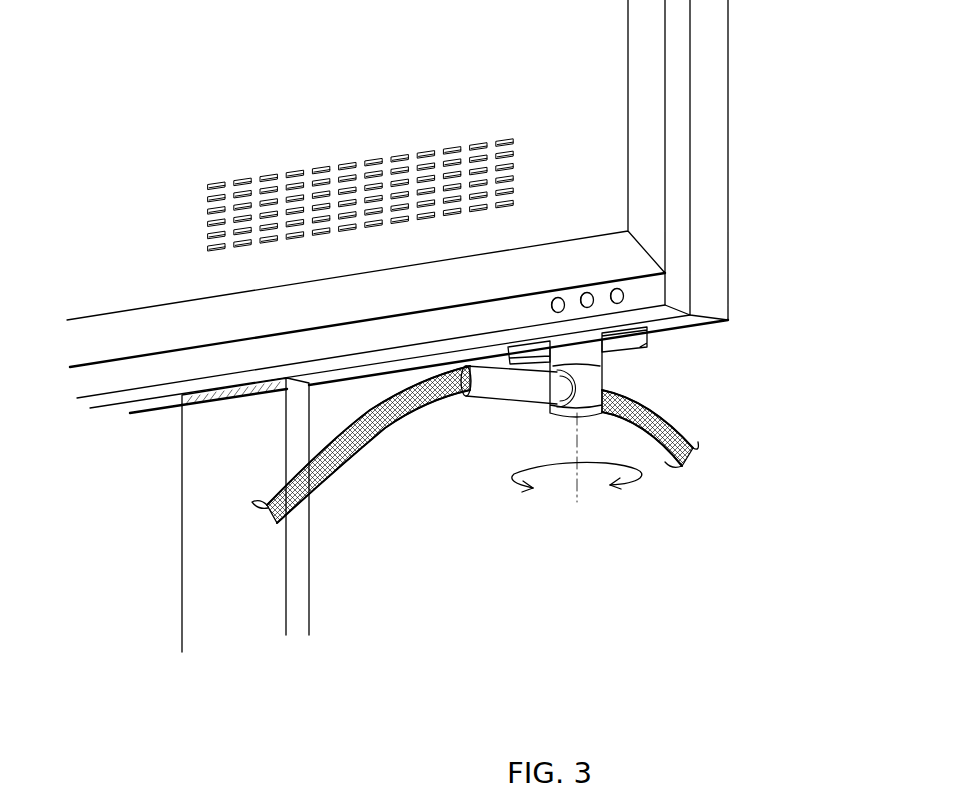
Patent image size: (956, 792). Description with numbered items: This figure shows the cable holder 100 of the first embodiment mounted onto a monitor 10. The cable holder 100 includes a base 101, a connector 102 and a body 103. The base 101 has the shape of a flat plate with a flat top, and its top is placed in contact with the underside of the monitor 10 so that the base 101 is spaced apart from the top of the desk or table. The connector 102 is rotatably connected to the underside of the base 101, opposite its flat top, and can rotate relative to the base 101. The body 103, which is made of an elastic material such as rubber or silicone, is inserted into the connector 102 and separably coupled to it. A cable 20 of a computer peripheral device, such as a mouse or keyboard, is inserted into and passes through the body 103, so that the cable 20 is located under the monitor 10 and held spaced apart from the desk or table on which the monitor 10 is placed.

The monitor 10 is at (730, 220).
The cable 20 is at (357, 447).
The cable holder 100 is at (718, 415).
The base 101 is at (647, 333).
The connector 102 is at (593, 374).
The body 103 is at (508, 387).